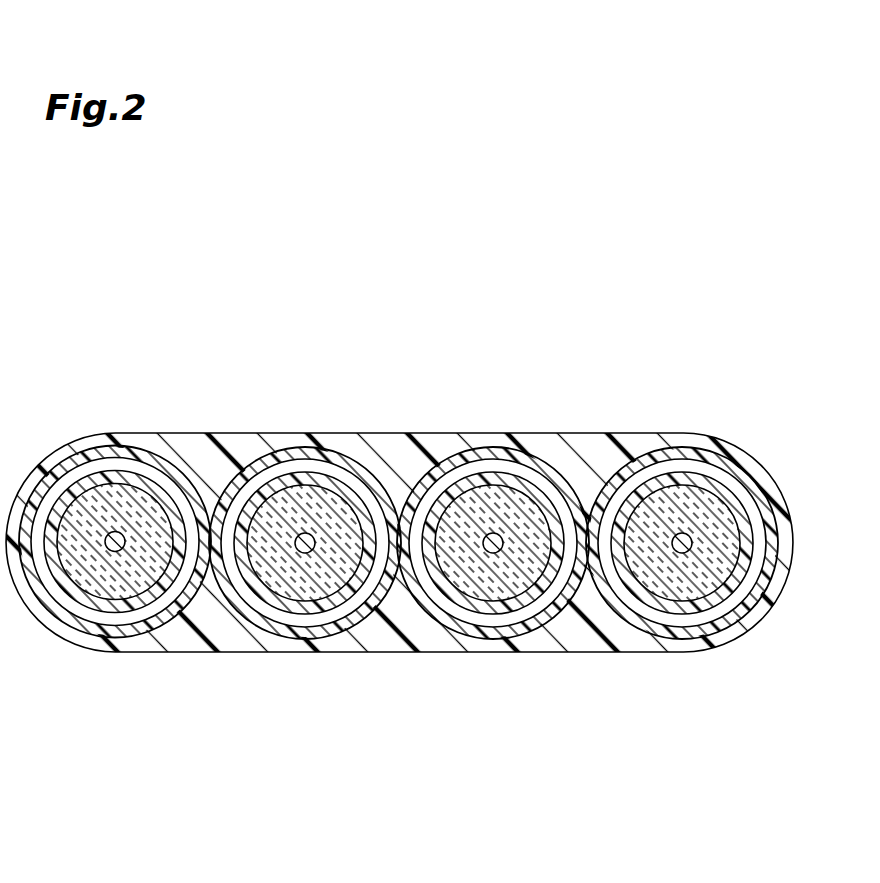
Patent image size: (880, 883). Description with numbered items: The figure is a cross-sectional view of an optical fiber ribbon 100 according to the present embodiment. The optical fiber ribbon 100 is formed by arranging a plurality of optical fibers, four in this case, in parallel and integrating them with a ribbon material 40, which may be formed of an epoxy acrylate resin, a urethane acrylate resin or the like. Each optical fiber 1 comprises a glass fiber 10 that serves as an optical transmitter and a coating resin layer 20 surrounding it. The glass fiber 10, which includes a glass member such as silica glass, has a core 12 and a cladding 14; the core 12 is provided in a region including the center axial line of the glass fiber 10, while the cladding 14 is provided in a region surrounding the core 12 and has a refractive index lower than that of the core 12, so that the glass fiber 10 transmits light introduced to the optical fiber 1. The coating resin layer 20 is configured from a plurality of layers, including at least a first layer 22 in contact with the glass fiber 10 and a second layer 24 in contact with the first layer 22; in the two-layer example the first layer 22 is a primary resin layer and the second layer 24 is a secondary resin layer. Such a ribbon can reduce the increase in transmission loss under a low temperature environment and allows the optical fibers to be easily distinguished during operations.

The optical fiber ribbon 100 is at (399, 567).
The ribbon material 40 is at (585, 450).
The optical fiber 1 is at (151, 622).
The glass fiber 10 is at (115, 621).
The core 12 is at (114, 551).
The cladding 14 is at (144, 577).
The coating resin layer 20 is at (151, 602).
The first layer 22 is at (164, 579).
The second layer 24 is at (191, 584).